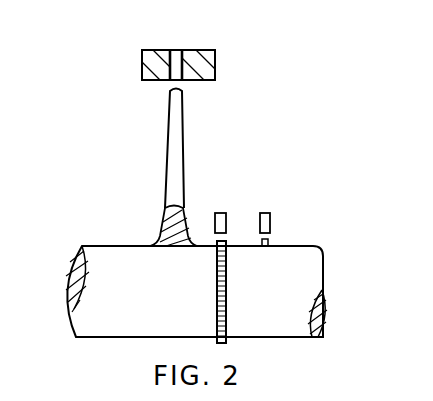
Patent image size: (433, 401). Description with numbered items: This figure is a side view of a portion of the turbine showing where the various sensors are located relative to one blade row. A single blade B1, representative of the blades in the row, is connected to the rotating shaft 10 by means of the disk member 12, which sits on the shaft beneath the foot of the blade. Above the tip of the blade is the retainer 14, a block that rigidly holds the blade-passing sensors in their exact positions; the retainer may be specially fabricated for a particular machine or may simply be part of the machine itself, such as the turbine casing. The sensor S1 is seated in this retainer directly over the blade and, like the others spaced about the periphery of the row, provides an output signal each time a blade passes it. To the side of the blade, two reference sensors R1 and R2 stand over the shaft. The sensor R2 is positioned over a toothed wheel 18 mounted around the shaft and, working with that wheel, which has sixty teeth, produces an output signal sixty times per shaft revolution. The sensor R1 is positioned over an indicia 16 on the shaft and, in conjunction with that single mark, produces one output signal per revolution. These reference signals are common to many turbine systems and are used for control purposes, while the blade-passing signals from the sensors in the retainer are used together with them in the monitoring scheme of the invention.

The rotating shaft 10 is at (300, 276).
The disk member 12 is at (165, 238).
The retainer 14 is at (150, 68).
The indicia 16 is at (270, 246).
The 60 tooth wheel 18 is at (216, 297).
The blade B1 is at (176, 130).
The sensor S1 is at (176, 56).
The reference sensor R1 is at (266, 213).
The reference sensor R2 is at (221, 213).